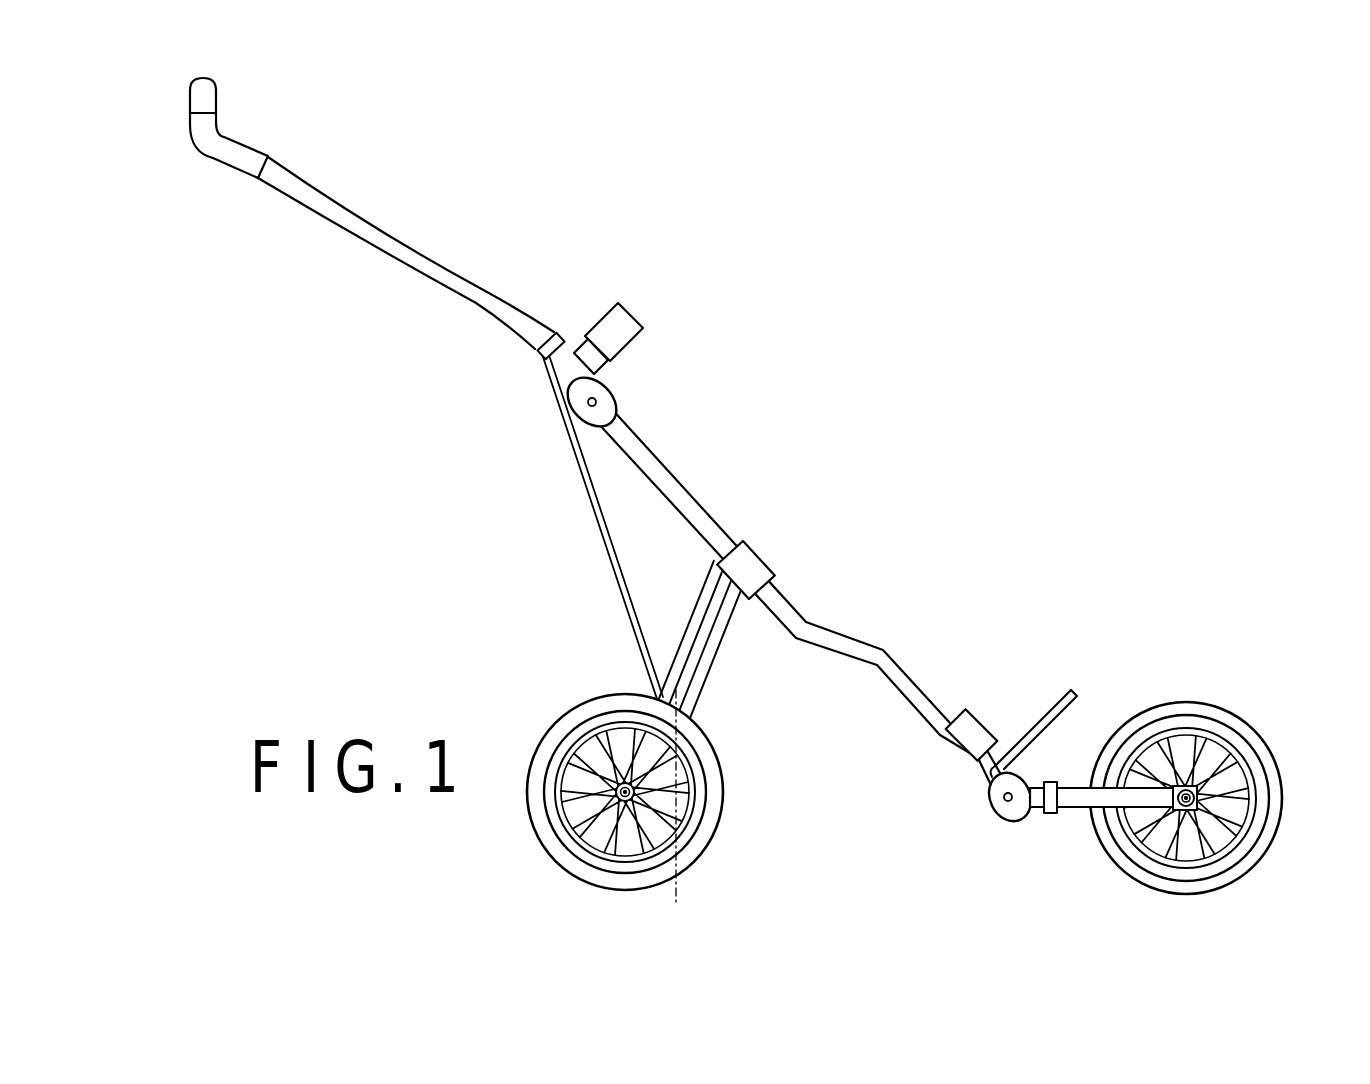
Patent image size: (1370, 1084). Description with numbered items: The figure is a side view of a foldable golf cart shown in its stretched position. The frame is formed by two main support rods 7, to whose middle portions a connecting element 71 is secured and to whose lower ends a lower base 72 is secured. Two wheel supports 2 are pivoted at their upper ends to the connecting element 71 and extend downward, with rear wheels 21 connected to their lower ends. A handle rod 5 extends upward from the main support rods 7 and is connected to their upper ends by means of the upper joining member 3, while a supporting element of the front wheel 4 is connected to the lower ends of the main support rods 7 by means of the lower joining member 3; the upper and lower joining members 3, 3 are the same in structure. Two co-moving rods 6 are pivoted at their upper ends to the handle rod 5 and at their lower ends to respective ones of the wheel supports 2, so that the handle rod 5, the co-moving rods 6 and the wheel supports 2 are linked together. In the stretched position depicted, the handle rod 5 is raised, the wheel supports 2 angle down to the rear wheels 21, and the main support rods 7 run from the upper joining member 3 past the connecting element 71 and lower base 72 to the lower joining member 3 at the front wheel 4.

The wheel support 2 is at (712, 668).
The joining member 3 is at (620, 397).
The front wheel 4 is at (1275, 765).
The handle rod 5 is at (350, 212).
The co-moving rod 6 is at (600, 531).
The main support rod 7 is at (836, 630).
The rear wheel 21 is at (713, 830).
The connecting element 71 is at (753, 560).
The lower base 72 is at (1046, 716).